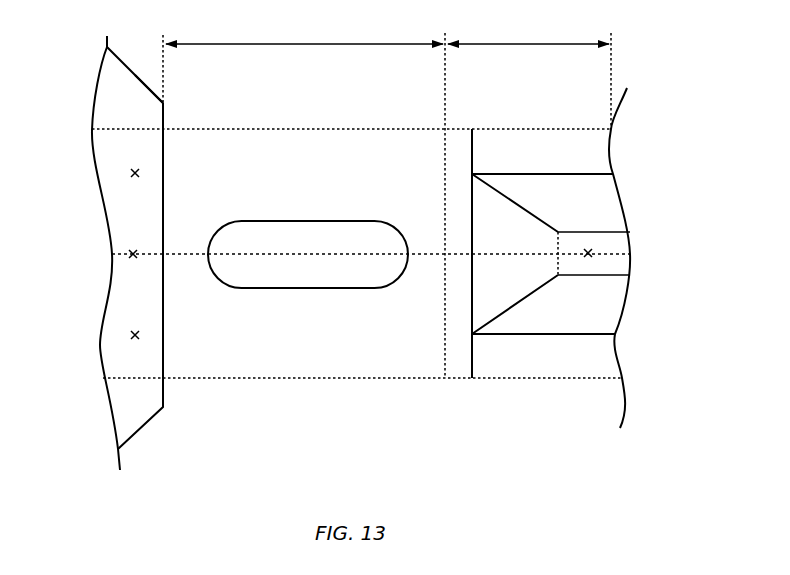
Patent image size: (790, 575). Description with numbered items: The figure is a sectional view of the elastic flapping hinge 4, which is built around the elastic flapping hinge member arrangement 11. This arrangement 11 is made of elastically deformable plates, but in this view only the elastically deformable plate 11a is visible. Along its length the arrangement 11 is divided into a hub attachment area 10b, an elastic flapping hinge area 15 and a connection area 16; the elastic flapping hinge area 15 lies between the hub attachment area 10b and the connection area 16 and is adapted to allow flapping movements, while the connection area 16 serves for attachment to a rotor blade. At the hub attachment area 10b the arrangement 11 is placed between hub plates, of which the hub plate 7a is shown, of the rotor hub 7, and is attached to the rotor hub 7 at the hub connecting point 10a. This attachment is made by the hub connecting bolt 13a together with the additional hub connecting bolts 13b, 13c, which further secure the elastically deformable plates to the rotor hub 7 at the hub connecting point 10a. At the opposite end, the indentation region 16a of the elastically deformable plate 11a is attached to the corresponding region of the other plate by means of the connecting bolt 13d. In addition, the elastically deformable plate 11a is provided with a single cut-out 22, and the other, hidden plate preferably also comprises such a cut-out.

The rotor hub 7 is at (120, 41).
The hub plate 7a is at (133, 98).
The hub connecting point 10a is at (125, 366).
The hub attachment area 10b is at (152, 312).
The elastic flapping hinge member arrangement 11 is at (386, 400).
The elastically deformable plate 11a is at (300, 136).
The hub connecting bolt 13a is at (130, 171).
The hub connecting bolt 13b is at (128, 252).
The hub connecting bolt 13c is at (130, 335).
The connecting bolt 13d is at (590, 252).
The cut-out 22 is at (288, 288).
The elastic flapping hinge 4 is at (362, 434).
The elastic flapping hinge area 15 is at (300, 44).
The connection area 16 is at (527, 44).
The indentation region 16a is at (638, 268).